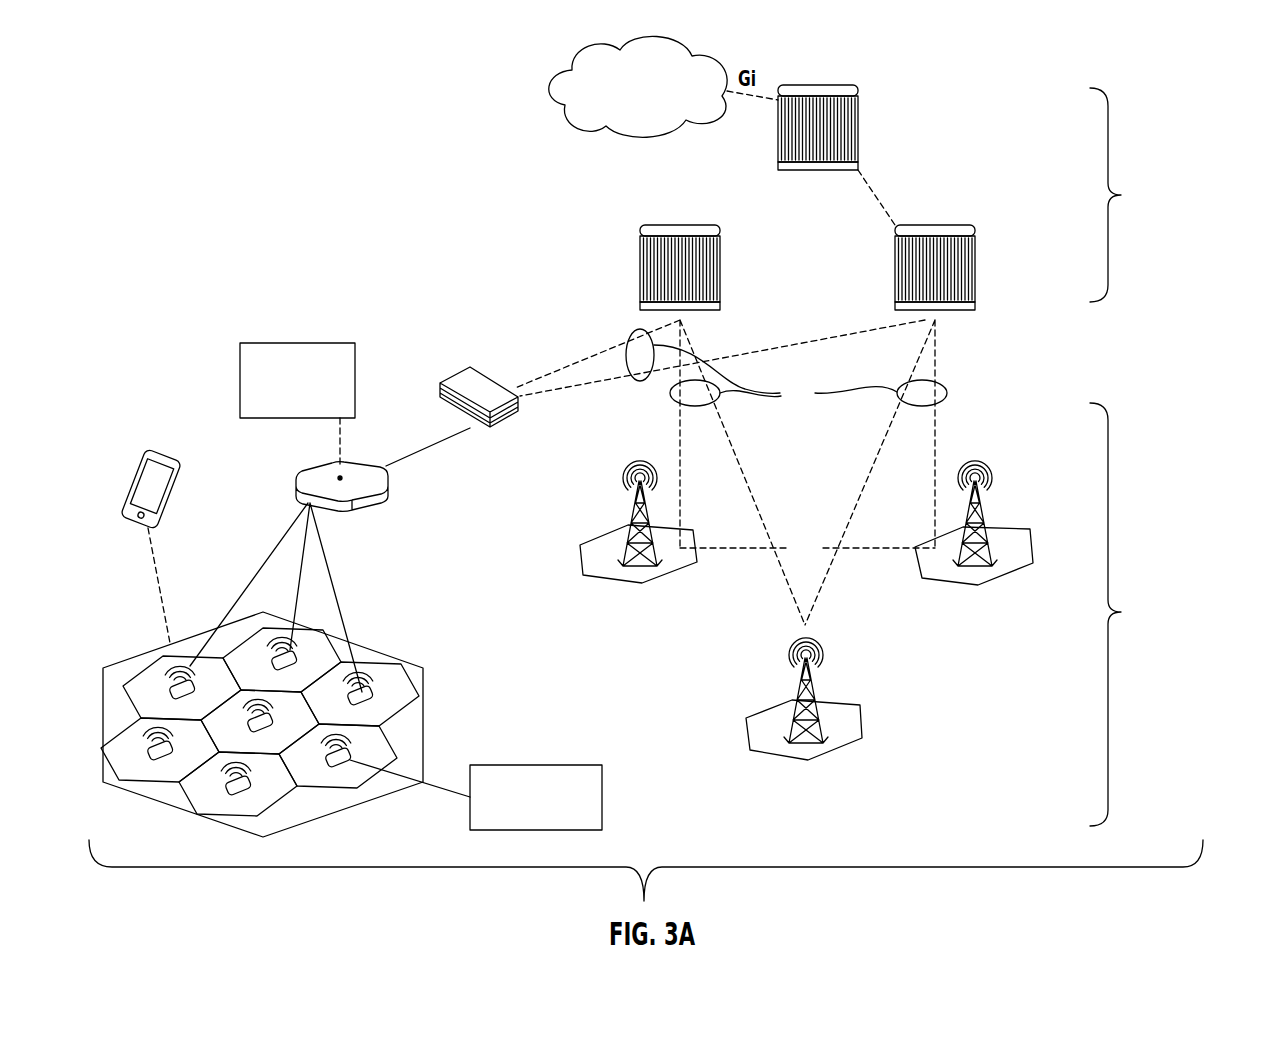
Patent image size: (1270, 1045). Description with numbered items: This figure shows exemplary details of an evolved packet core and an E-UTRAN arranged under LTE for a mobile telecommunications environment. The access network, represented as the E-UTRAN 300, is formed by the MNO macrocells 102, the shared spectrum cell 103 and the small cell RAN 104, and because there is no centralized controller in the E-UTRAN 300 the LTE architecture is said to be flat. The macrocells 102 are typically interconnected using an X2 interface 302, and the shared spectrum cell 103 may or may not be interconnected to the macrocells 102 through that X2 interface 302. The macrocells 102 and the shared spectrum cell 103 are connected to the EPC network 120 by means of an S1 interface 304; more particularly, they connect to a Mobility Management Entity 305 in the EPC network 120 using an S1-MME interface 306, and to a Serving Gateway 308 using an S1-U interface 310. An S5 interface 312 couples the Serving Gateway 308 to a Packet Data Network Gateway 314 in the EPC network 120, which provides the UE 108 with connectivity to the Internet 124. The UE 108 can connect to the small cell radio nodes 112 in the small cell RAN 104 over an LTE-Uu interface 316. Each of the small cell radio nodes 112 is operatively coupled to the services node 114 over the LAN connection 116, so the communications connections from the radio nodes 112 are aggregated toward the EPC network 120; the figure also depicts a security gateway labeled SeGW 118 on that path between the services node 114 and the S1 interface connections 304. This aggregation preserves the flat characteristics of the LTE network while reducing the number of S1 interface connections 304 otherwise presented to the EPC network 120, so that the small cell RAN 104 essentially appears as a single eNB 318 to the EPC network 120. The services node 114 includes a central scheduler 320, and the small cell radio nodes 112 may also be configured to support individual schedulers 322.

The Internet 124 is at (548, 83).
The Packet Data Network Gateway (P-GW) 314 is at (858, 100).
The S5 interface 312 is at (916, 190).
The Mobility Management Entity (MME) 305 is at (720, 243).
The Serving Gateway (S-GW) 308 is at (975, 243).
The S1-MME interface 306 is at (663, 468).
The S1-U interface 310 is at (780, 468).
The S1 interface 304 is at (786, 369).
The X2 interface 302 is at (845, 535).
The SeGW security gateway 118 is at (470, 367).
The central scheduler 320 is at (310, 343).
The services node 114 is at (388, 497).
The LAN connection 116 is at (327, 553).
The user equipment (UE) 108 is at (135, 461).
The LTE-Uu interface 316 is at (130, 585).
The small cell RAN 104 is at (360, 717).
The small cell radio nodes 112 is at (410, 729).
The single eNB 318 is at (425, 685).
The individual schedulers 322 is at (602, 800).
The MNO macrocells 102 is at (580, 545).
The shared spectrum cell 103 is at (858, 703).
The EPC network 120 is at (1168, 195).
The E-UTRAN 300 is at (1149, 614).